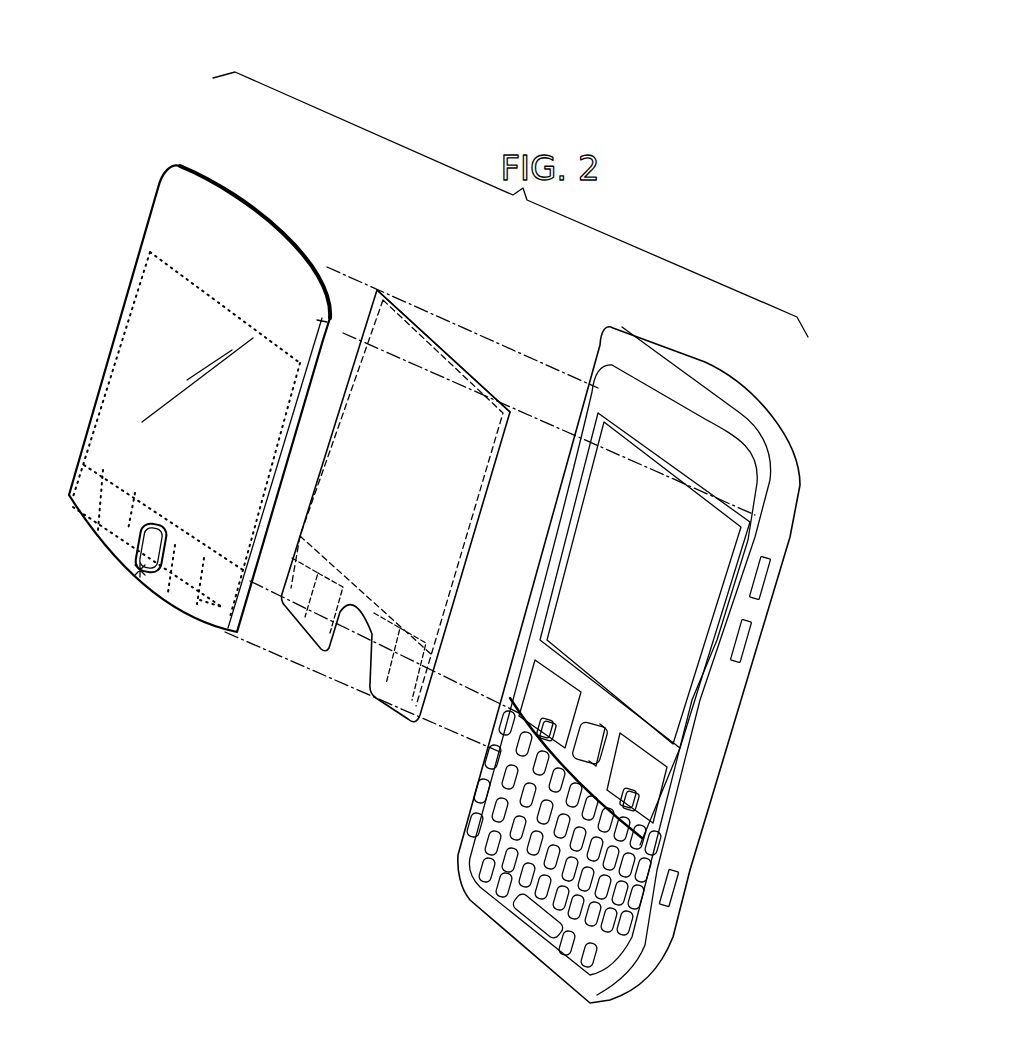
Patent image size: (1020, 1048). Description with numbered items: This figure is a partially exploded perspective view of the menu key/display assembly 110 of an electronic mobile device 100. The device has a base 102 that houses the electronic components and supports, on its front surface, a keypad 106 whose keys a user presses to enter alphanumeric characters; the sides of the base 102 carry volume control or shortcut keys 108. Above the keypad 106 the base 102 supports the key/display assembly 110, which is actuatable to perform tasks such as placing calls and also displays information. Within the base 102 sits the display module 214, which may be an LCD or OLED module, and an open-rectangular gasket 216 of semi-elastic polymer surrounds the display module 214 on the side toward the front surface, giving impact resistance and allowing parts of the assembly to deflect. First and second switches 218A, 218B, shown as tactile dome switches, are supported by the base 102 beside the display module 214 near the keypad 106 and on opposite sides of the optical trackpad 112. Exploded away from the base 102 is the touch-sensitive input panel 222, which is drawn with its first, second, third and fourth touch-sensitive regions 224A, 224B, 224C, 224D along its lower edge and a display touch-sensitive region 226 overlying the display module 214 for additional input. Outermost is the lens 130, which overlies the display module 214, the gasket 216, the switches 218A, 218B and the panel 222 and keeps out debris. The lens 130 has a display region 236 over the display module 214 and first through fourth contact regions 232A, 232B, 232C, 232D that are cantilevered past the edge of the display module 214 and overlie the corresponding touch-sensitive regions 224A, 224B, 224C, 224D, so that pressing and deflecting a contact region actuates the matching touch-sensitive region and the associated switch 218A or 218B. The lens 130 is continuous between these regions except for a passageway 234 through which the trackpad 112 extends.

The electronic mobile device 100 is at (182, 108).
The base 102 is at (800, 548).
The keypad 106 is at (460, 858).
The volume control or shortcut keys 108 is at (748, 650).
The key/display assembly 110 is at (362, 246).
The optical trackpad 112 is at (595, 722).
The lens 130 is at (108, 290).
The display module 214 is at (553, 545).
The gasket 216 is at (540, 583).
The first switch 218A is at (540, 722).
The second switch 218B is at (636, 796).
The touch-sensitive input panel 222 is at (460, 350).
The first touch-sensitive region 224A is at (255, 648).
The second touch-sensitive region 224B is at (292, 640).
The third touch-sensitive region 224C is at (372, 698).
The fourth touch-sensitive region 224D is at (400, 720).
The display touch-sensitive region 226 is at (483, 385).
The first contact region 232A is at (83, 517).
The second contact region 232B is at (128, 497).
The third contact region 232C is at (190, 550).
The fourth contact region 232D is at (203, 620).
The passageway 234 is at (140, 570).
The display region 236 is at (203, 290).